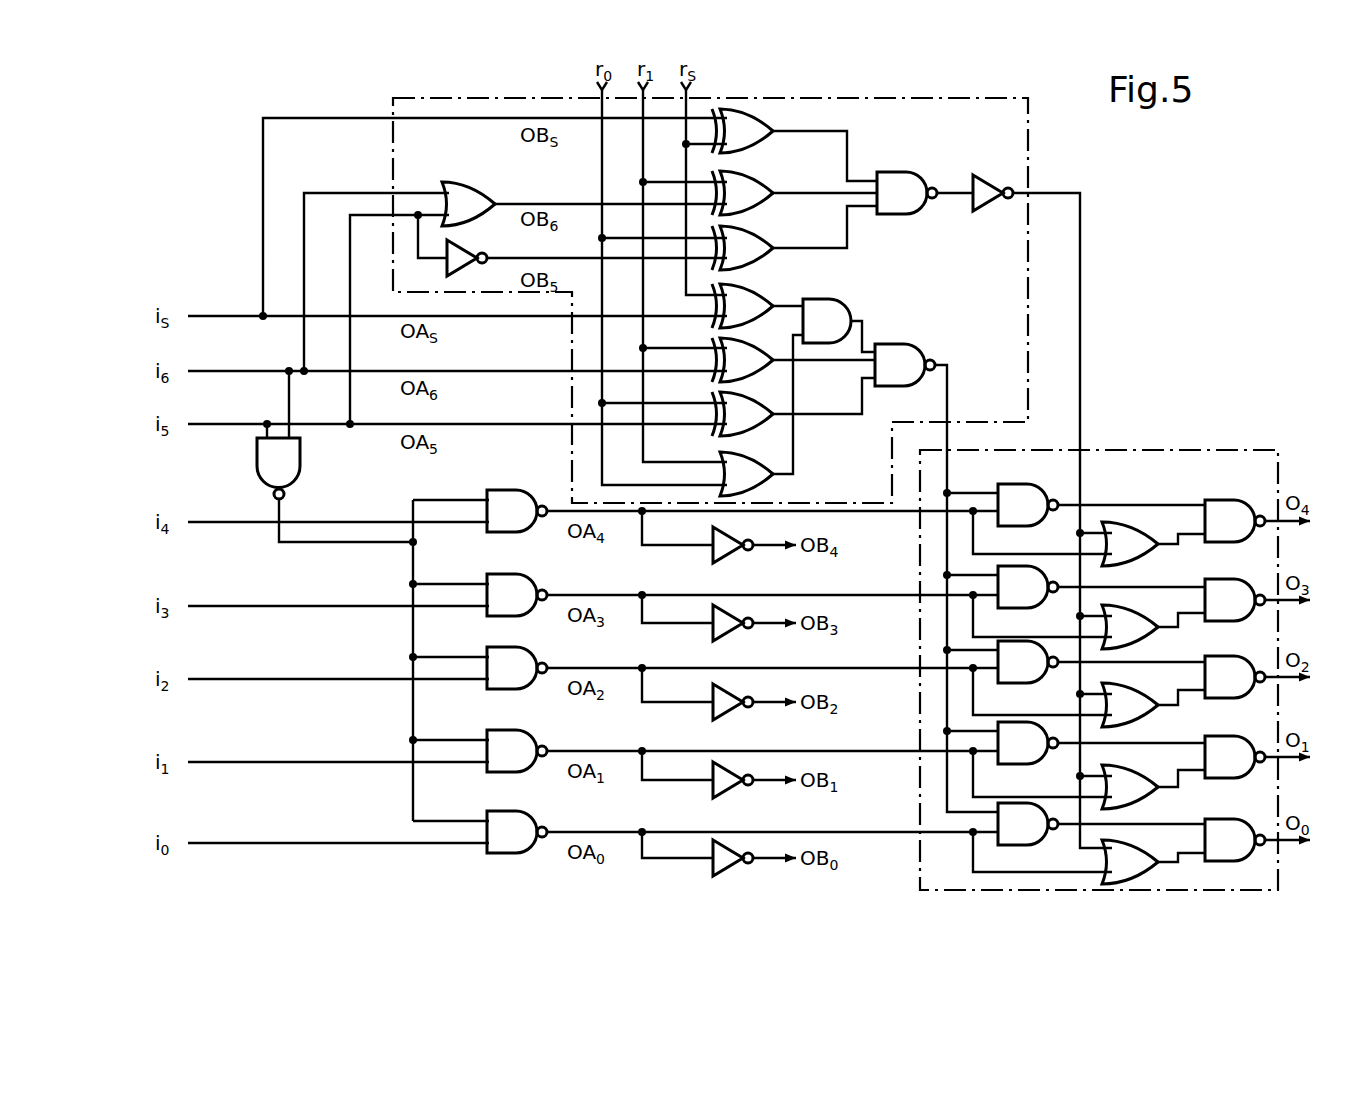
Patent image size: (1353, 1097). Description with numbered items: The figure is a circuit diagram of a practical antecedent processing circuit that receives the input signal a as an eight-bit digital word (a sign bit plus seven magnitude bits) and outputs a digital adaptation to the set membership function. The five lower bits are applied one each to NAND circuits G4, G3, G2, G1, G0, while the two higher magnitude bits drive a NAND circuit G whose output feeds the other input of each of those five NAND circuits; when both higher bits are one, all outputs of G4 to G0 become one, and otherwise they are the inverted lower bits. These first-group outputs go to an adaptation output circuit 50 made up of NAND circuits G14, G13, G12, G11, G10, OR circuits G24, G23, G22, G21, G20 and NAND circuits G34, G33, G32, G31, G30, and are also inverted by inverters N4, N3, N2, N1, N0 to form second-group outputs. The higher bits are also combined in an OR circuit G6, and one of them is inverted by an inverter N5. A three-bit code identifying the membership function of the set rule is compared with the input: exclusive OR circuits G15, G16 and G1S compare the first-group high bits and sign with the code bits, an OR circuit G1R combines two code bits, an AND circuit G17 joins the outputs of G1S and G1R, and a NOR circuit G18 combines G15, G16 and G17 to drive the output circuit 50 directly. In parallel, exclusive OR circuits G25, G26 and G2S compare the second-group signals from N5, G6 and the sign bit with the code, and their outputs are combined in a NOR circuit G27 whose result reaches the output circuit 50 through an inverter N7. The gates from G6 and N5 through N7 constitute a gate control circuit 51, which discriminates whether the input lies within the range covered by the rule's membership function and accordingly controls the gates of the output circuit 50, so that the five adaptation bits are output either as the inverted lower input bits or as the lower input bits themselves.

The adaptation output circuit 50 is at (1150, 450).
The gate control circuit 51 is at (880, 98).
The NAND circuit G is at (302, 467).
The NAND circuit G0 is at (500, 811).
The NAND circuit G1 is at (500, 730).
The NAND circuit G2 is at (499, 647).
The NAND circuit G3 is at (505, 574).
The NAND circuit G4 is at (503, 490).
The OR circuit G6 is at (466, 182).
The inverter N0 is at (727, 872).
The inverter N1 is at (727, 794).
The inverter N2 is at (727, 716).
The inverter N3 is at (727, 637).
The inverter N4 is at (727, 559).
The inverter N5 is at (466, 251).
The inverter N7 is at (986, 177).
The NAND circuit G10 is at (1022, 846).
The NAND circuit G11 is at (1022, 765).
The NAND circuit G12 is at (1022, 684).
The NAND circuit G13 is at (1022, 609).
The NAND circuit G14 is at (1022, 527).
The exclusive OR circuit G15 is at (761, 395).
The exclusive OR circuit G16 is at (761, 341).
The AND circuit G17 is at (832, 298).
The NOR circuit G18 is at (880, 343).
The OR circuit G1R is at (761, 455).
The exclusive OR circuit G1S is at (763, 286).
The OR circuit G20 is at (1150, 875).
The OR circuit G21 is at (1145, 803).
The OR circuit G22 is at (1145, 721).
The OR circuit G23 is at (1145, 643).
The OR circuit G24 is at (1145, 560).
The exclusive OR circuit G25 is at (763, 228).
The exclusive OR circuit G26 is at (763, 173).
The NOR circuit G27 is at (888, 171).
The exclusive OR circuit G2S is at (763, 112).
The NAND circuit G30 is at (1220, 819).
The NAND circuit G31 is at (1218, 736).
The NAND circuit G32 is at (1218, 656).
The NAND circuit G33 is at (1220, 579).
The NAND circuit G34 is at (1220, 500).